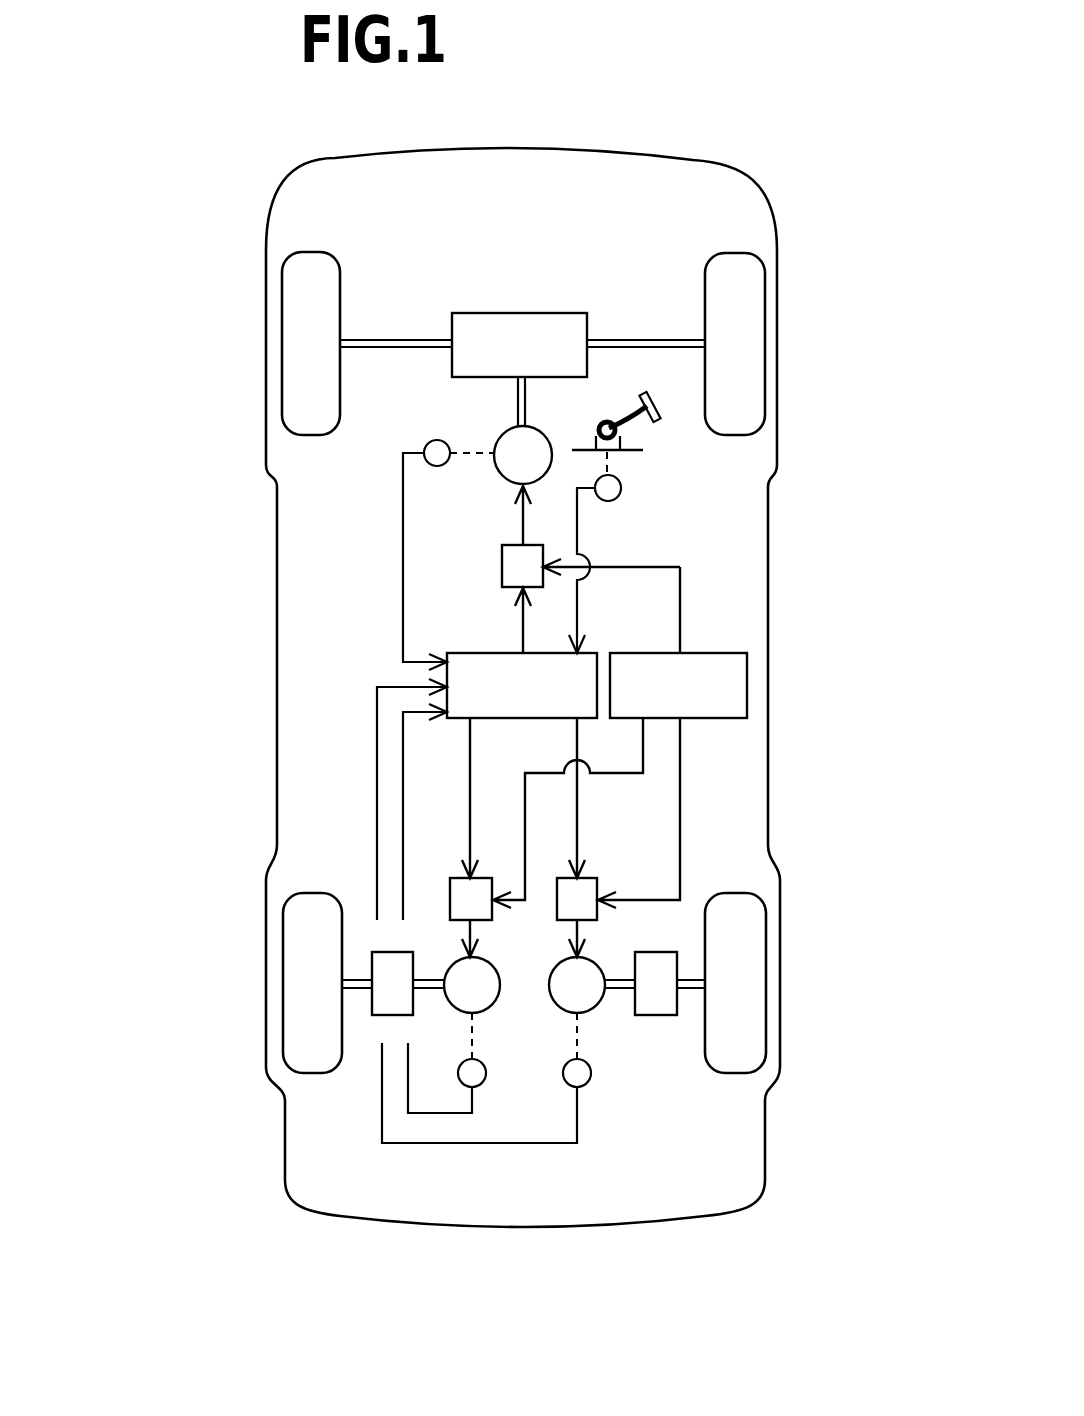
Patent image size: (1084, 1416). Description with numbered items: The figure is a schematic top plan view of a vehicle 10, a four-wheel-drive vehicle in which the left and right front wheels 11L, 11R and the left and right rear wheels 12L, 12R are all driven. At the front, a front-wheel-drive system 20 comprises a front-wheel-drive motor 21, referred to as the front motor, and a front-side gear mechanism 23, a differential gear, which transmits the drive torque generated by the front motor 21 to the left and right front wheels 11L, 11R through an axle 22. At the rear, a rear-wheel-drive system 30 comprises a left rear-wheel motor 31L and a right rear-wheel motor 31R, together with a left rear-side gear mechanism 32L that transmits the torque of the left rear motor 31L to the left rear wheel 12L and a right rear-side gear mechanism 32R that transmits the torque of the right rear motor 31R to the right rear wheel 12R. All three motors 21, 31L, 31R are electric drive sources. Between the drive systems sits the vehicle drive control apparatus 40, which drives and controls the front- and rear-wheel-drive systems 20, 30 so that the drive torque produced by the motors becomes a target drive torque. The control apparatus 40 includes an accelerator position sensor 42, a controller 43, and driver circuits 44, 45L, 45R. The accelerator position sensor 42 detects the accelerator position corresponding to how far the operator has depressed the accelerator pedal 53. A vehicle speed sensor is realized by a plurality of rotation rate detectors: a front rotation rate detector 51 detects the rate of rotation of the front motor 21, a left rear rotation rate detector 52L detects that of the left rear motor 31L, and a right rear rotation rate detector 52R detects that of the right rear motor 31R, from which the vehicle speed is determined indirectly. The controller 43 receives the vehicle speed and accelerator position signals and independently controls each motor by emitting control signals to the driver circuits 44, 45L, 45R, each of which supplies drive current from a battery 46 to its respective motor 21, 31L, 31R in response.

The vehicle 10 is at (695, 158).
The left front wheel 11L is at (297, 296).
The right front wheel 11R is at (753, 295).
The left rear wheel 12L is at (300, 985).
The right rear wheel 12R is at (750, 985).
The front-wheel-drive system 20 is at (401, 353).
The front-wheel-drive motor 21 is at (466, 430).
The axle 22 is at (394, 340).
The front-side gear mechanism 23 is at (514, 313).
The rear-wheel-drive system 30 is at (505, 1056).
The left rear-wheel motor 31L is at (458, 1013).
The right rear-wheel motor 31R is at (593, 1013).
The left rear-side gear mechanism 32L is at (385, 1015).
The right rear-side gear mechanism 32R is at (663, 1015).
The vehicle drive control apparatus 40 is at (493, 874).
The accelerator position sensor 42 is at (621, 489).
The controller 43 is at (587, 653).
The driver circuit 44 is at (512, 566).
The driver circuit 45L is at (460, 888).
The driver circuit 45R is at (593, 887).
The battery 46 is at (735, 653).
The front rotation rate detector 51 is at (426, 445).
The left rear rotation rate detector 52L is at (486, 1072).
The right rear rotation rate detector 52R is at (591, 1072).
The accelerator pedal 53 is at (660, 402).